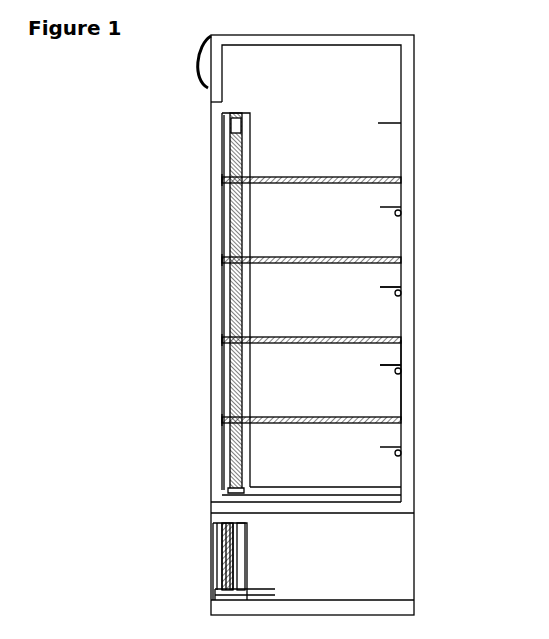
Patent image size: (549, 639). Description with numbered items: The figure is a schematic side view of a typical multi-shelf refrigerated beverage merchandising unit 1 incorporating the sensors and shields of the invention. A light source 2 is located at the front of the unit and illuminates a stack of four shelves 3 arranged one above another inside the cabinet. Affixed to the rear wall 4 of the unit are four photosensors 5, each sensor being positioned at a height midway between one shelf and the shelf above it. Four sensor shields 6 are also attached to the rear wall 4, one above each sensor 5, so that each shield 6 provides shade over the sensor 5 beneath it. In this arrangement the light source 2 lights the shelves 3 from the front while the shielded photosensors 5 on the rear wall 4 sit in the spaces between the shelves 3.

The refrigerated beverage merchandising unit 1 is at (428, 96).
The light source 2 is at (245, 229).
The shelves 3 is at (347, 267).
The rear wall 4 is at (395, 386).
The photosensors 5 is at (402, 294).
The sensor shields 6 is at (390, 281).